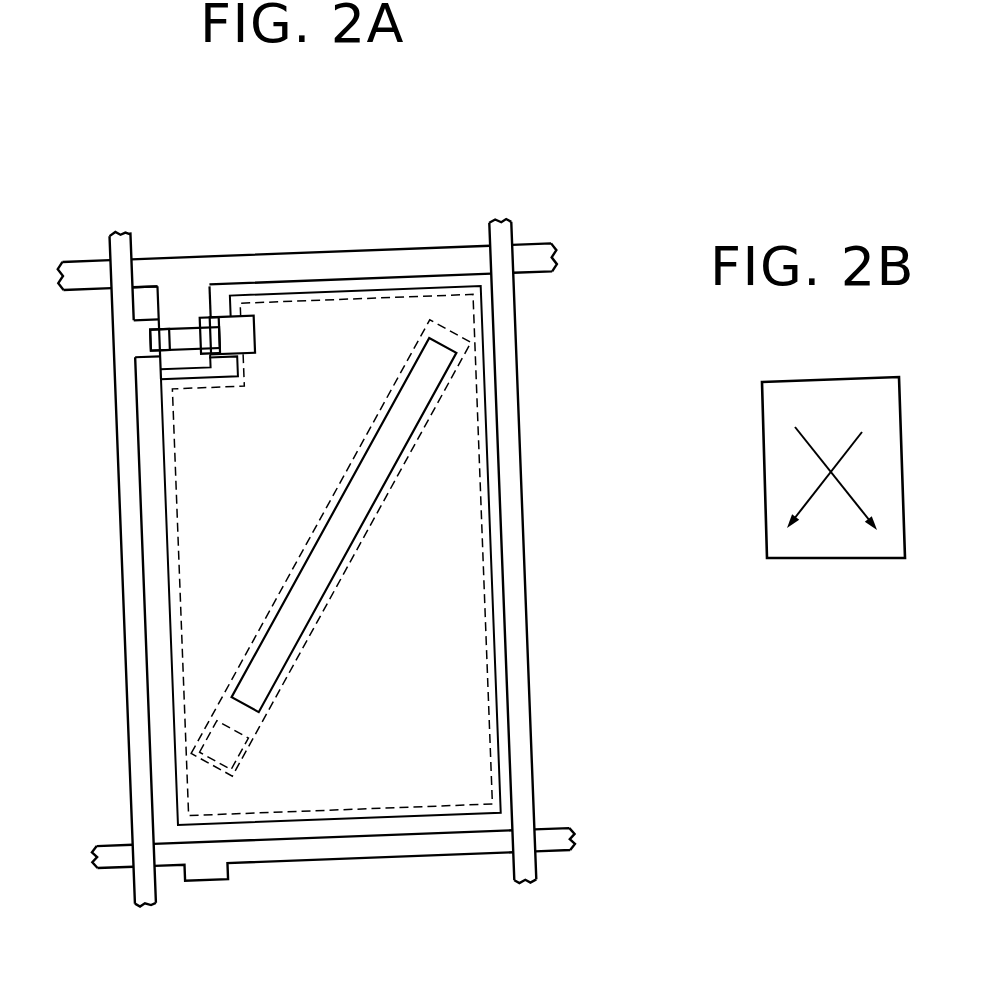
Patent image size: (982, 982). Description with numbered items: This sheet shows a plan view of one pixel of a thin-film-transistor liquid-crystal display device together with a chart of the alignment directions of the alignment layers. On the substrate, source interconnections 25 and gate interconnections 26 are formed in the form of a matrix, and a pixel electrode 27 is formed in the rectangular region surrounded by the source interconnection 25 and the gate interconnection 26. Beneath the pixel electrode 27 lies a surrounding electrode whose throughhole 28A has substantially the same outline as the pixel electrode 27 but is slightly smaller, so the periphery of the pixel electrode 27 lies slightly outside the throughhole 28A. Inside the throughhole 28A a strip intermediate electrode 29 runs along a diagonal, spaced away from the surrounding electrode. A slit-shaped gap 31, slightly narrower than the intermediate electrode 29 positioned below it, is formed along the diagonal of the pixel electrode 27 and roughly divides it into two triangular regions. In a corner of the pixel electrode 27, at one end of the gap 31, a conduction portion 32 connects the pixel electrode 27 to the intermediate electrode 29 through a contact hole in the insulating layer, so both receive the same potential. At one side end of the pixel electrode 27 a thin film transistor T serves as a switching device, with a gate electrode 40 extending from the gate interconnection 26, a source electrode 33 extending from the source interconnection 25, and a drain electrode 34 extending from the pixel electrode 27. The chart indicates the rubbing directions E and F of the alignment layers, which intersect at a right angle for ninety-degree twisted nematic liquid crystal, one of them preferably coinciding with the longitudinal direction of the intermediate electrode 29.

In FIG. 2A, the source interconnection 25 is at (128, 623).
In FIG. 2A, the gate interconnection 26 is at (320, 263).
In FIG. 2A, the pixel electrode 27 is at (457, 705).
In FIG. 2A, the throughhole 28A is at (287, 800).
In FIG. 2A, the intermediate electrode 29 is at (330, 502).
In FIG. 2A, the slit-shaped gap 31 is at (315, 610).
In FIG. 2A, the conduction portion 32 is at (243, 755).
In FIG. 2A, the source electrode 33 is at (147, 323).
In FIG. 2A, the drain electrode 34 is at (217, 323).
In FIG. 2A, the gate electrode 40 is at (180, 305).
In FIG. 2A, the thin film transistor T is at (150, 366).
In FIG. 2B, the alignment direction F is at (829, 478).
In FIG. 2B, the alignment direction E is at (831, 480).